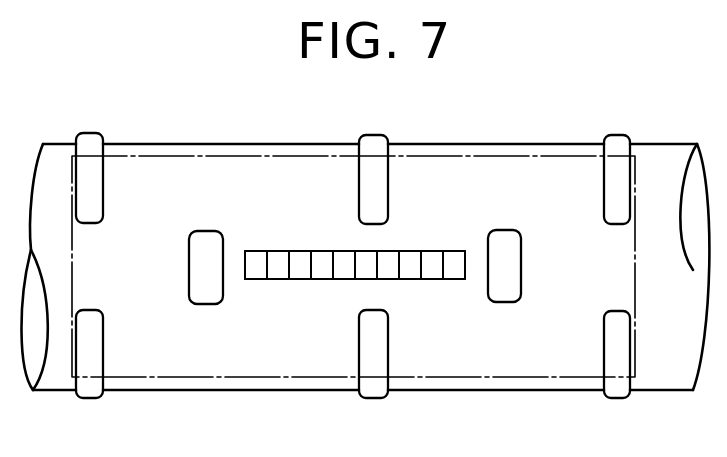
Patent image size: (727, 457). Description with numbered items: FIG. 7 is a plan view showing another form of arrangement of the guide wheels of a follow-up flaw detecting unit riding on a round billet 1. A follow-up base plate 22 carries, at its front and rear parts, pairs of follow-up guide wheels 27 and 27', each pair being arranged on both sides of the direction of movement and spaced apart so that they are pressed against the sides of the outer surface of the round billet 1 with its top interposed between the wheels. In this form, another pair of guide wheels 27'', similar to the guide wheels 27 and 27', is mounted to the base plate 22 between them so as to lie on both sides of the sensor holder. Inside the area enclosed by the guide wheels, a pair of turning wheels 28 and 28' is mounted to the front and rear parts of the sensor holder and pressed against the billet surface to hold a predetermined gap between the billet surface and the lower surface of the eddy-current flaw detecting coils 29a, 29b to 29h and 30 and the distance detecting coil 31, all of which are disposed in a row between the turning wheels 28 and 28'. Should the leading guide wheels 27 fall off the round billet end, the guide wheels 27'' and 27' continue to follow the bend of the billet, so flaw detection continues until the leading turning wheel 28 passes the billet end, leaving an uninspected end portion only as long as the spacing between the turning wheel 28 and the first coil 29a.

The round billet 1 is at (215, 143).
The base plate 22 is at (512, 156).
The follow-up guide wheels 27 is at (603, 258).
The follow-up guide wheels 27' is at (106, 258).
The guide wheels 27'' is at (387, 258).
The turning wheel 28 is at (513, 247).
The turning wheel 28' is at (217, 248).
The eddy-current flaw detecting coil 29a is at (453, 274).
The eddy-current flaw detecting coil 29b is at (437, 253).
The eddy-current flaw detecting coil 29h is at (300, 274).
The eddy-current flaw detecting coil 30 is at (280, 253).
The distance detecting coil 31 is at (255, 276).